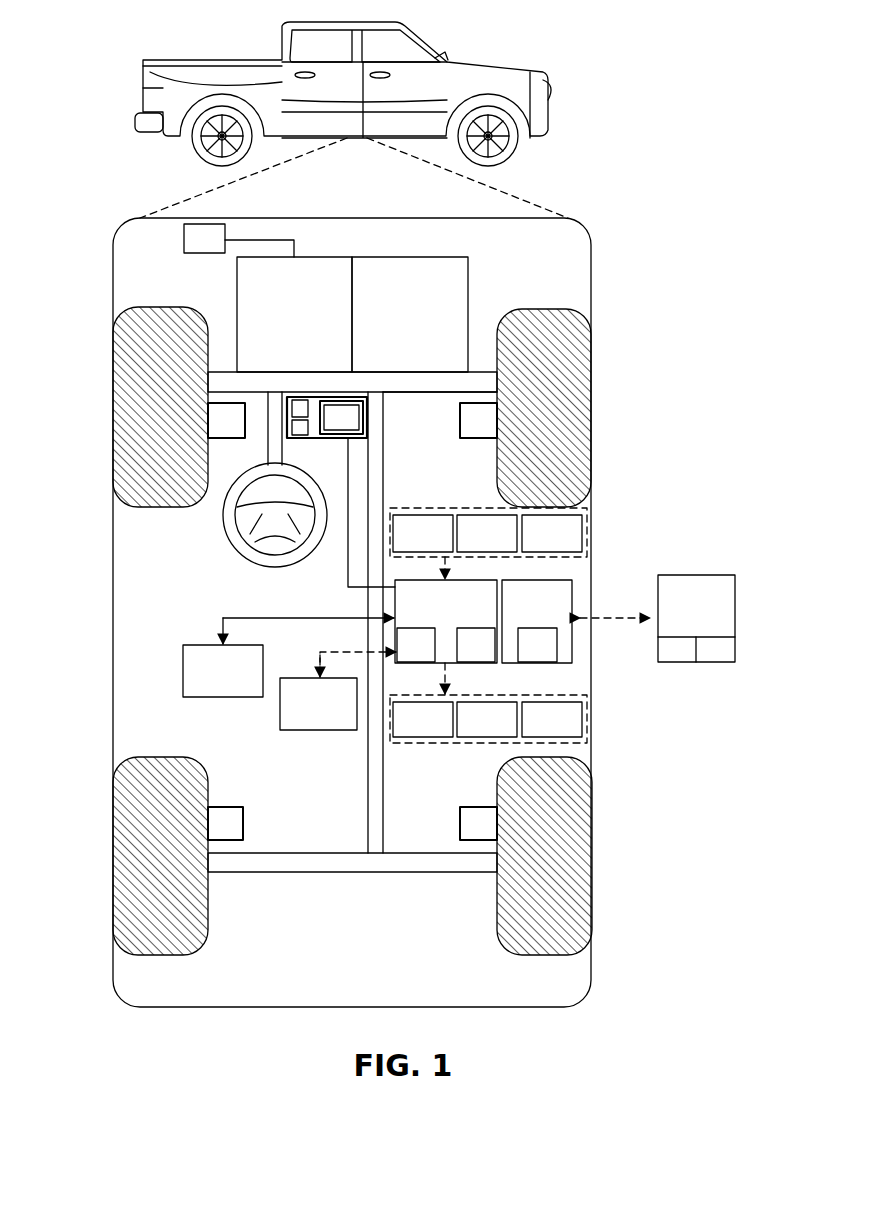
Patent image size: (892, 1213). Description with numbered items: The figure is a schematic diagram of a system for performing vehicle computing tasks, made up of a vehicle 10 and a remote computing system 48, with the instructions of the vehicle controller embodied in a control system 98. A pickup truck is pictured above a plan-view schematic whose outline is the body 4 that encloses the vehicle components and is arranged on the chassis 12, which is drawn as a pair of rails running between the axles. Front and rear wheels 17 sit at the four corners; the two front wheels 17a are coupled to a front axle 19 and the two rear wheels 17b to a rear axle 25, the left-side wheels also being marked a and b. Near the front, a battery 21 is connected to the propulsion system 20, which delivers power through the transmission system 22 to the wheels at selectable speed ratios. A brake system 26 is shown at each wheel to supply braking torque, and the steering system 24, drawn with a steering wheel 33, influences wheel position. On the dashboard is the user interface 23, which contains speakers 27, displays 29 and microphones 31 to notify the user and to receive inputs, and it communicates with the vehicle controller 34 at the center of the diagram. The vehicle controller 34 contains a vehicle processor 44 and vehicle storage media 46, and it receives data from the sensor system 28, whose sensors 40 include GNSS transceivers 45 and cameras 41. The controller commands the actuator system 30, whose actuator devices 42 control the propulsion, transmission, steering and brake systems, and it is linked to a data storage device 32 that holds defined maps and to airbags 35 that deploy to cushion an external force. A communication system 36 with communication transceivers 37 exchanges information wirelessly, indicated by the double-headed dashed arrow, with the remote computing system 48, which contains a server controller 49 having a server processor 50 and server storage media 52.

The vehicle 10 is at (500, 60).
The control system 98 is at (736, 466).
The vehicle body 4 is at (113, 585).
The front and rear wheels 17 is at (160, 307).
The front wheels 17a is at (575, 400).
The rear wheels 17b is at (572, 855).
The left front wheel a is at (130, 397).
The left rear wheel b is at (130, 850).
The battery 21 is at (203, 224).
The propulsion system 20 is at (294, 314).
The transmission system 22 is at (410, 314).
The front axle 19 is at (438, 394).
The steering wheel 33 is at (226, 528).
The steering system 24 is at (292, 444).
The user interface 23 is at (340, 397).
The speakers 27 is at (298, 400).
The displays 29 is at (289, 427).
The microphones 31 is at (341, 417).
The chassis 12 is at (368, 758).
The brake system 26 is at (352, 621).
The sensor system 28 is at (458, 507).
The sensors 40 is at (423, 533).
The Global Navigation Satellite System transceivers 45 is at (487, 533).
The cameras 41 is at (552, 533).
The vehicle controller 34 is at (446, 621).
The vehicle processor 44 is at (416, 645).
The vehicle non-transitory computer readable storage device or media 46 is at (476, 645).
The communication system 36 is at (537, 621).
The communication transceivers 37 is at (537, 645).
The airbags 35 is at (223, 671).
The data storage device 32 is at (318, 704).
The actuator system 30 is at (458, 745).
The actuator devices 42 is at (487, 719).
The rear axle 25 is at (410, 852).
The remote computing system 48 is at (697, 575).
The server controller 49 is at (705, 616).
The server processor 50 is at (675, 652).
The server non-transitory computer readable storage device or media 52 is at (718, 652).